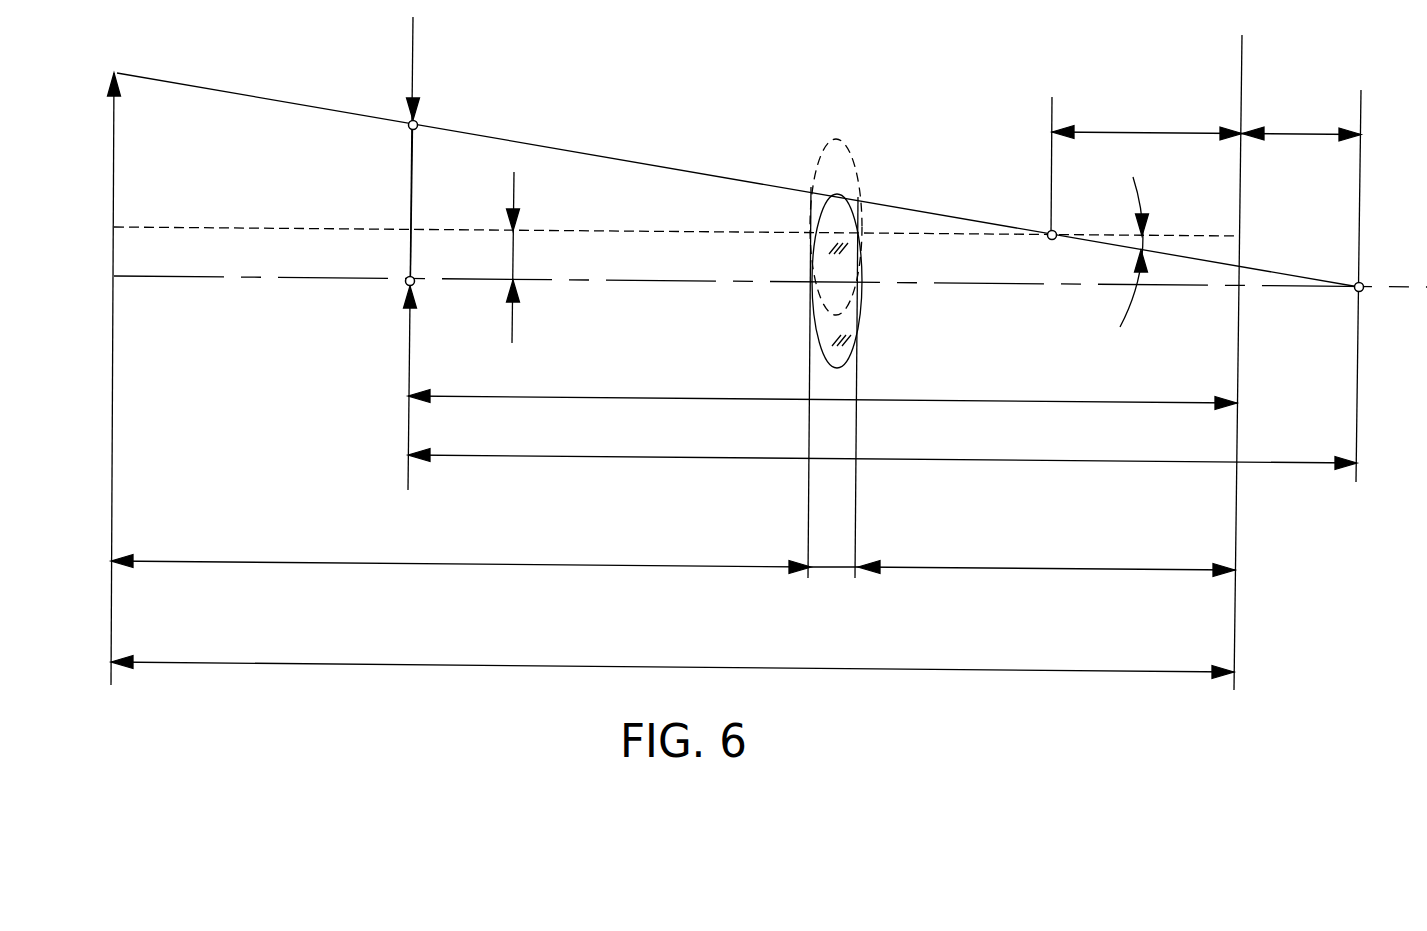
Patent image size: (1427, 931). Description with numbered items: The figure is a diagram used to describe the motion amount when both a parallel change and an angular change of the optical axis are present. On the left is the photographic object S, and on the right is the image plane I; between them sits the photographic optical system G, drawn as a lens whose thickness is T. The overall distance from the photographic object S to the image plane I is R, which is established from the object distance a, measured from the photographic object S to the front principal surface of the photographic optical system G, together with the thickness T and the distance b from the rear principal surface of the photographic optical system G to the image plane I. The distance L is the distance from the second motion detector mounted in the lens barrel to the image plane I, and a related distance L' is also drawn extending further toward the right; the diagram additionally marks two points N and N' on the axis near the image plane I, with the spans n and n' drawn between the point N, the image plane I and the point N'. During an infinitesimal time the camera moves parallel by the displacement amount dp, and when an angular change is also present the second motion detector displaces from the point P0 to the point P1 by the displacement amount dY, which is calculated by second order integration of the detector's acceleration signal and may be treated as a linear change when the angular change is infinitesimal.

The photographic object S is at (117, 138).
The point P1 is at (408, 118).
The point P0 is at (405, 284).
The amount of displacement dY is at (412, 190).
The displacement amount dp is at (513, 262).
The photographic optical system G is at (840, 142).
The thickness of the photographic optical system T is at (842, 566).
The front nodal point N is at (1036, 168).
The rear nodal point N' is at (1379, 286).
The image plane I is at (1243, 362).
The distance from nodal point N to image plane n is at (1147, 119).
The distance from image plane to nodal point N' n' is at (1301, 120).
The distance from the second motion detector to the image plane L is at (822, 382).
The distance from object point to rear nodal point L' is at (882, 443).
The distance from the photographic object to the front principal surface a is at (463, 560).
The distance from the rear principal surface to the image plane b is at (1046, 566).
The distance from the photographic object to the image plane R is at (690, 665).